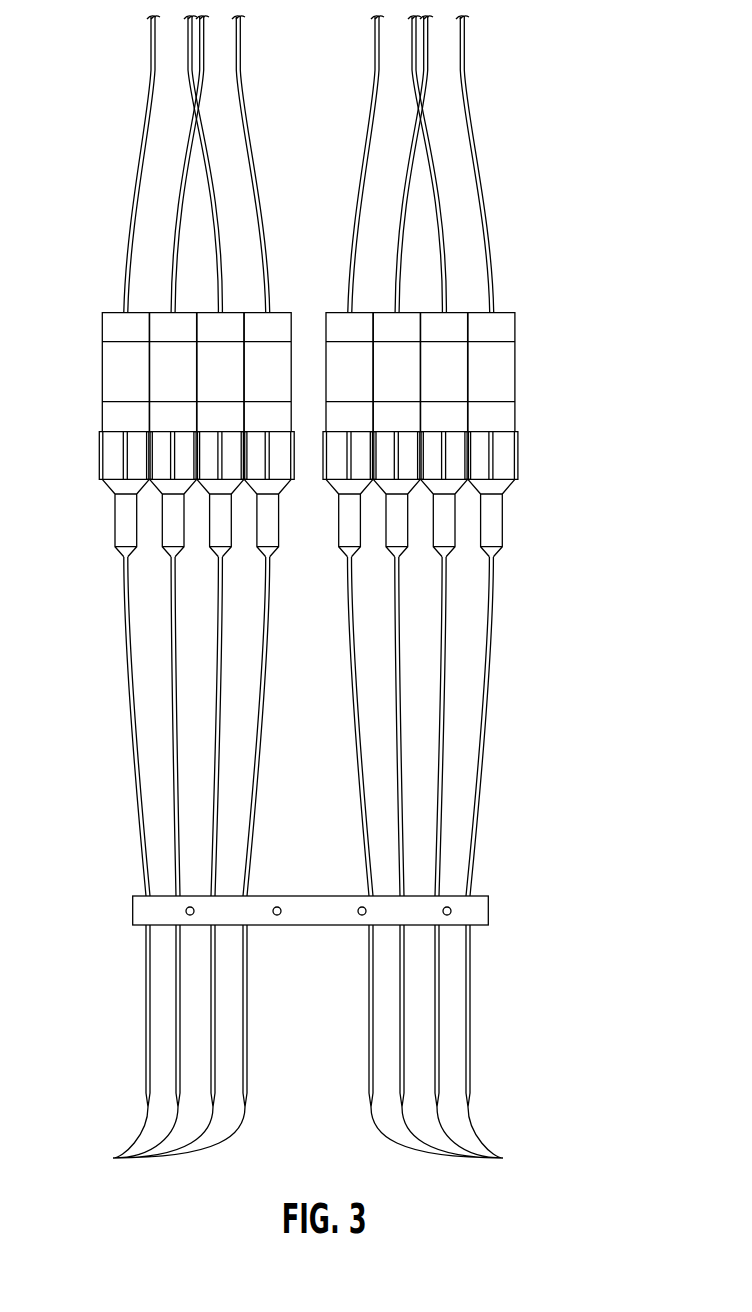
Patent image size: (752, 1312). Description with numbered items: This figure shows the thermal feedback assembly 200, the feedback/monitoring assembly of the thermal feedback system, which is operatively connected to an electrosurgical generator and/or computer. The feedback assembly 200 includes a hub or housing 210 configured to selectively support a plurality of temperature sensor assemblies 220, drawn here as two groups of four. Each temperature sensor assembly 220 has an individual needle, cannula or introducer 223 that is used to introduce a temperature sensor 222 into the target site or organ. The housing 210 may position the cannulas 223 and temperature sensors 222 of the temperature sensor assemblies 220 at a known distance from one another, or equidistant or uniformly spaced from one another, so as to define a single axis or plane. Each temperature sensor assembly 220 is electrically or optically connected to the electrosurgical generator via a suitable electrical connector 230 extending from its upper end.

The thermal feedback assembly 200 is at (580, 322).
The hub or housing 210 is at (492, 900).
The temperature sensor assembly 220 is at (102, 333).
The temperature sensor 222 is at (308, 1051).
The needle, cannula or introducer 223 is at (130, 648).
The electrical connector 230 is at (130, 211).